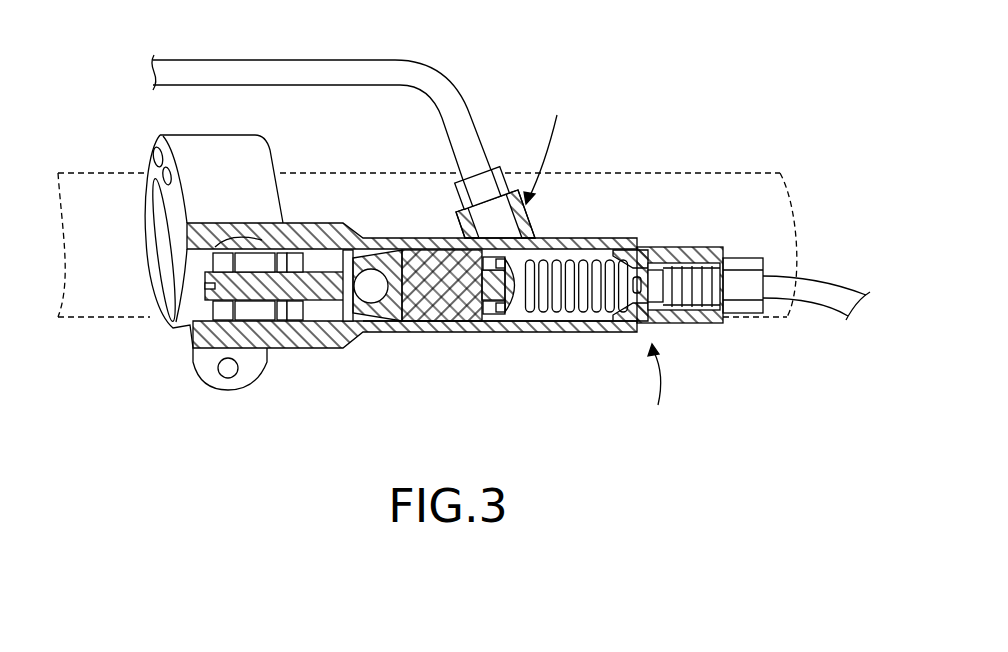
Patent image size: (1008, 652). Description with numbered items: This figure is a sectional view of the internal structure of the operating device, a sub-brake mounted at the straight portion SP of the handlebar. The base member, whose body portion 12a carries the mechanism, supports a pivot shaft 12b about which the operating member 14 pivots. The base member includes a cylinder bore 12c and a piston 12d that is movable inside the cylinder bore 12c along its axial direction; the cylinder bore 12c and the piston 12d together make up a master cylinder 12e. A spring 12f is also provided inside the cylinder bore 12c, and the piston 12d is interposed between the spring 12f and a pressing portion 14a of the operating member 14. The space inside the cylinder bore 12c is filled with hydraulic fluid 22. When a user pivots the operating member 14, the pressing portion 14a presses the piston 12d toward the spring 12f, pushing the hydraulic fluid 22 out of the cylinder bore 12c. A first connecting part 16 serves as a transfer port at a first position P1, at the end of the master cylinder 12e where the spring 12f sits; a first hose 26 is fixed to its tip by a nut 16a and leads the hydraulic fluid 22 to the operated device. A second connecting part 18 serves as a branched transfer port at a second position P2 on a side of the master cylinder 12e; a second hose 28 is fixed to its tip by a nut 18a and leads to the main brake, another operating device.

The housing body 12a is at (235, 143).
The pivot shaft 12b is at (260, 257).
The cylinder bore 12c is at (572, 319).
The piston 12d is at (438, 272).
The master cylinder 12e is at (513, 333).
The spring 12f is at (616, 243).
The operating member 14 is at (311, 301).
The pressing portion 14a is at (368, 301).
The first connecting part 16 is at (703, 319).
The nut 16a is at (745, 258).
The second connecting part 18 is at (522, 225).
The nut 18a is at (502, 185).
The hydraulic fluid 22 is at (586, 256).
The first hose 26 is at (827, 306).
The second hose 28 is at (308, 66).
The first position P1 is at (651, 387).
The second position P2 is at (549, 147).
The straight portion SP is at (716, 174).